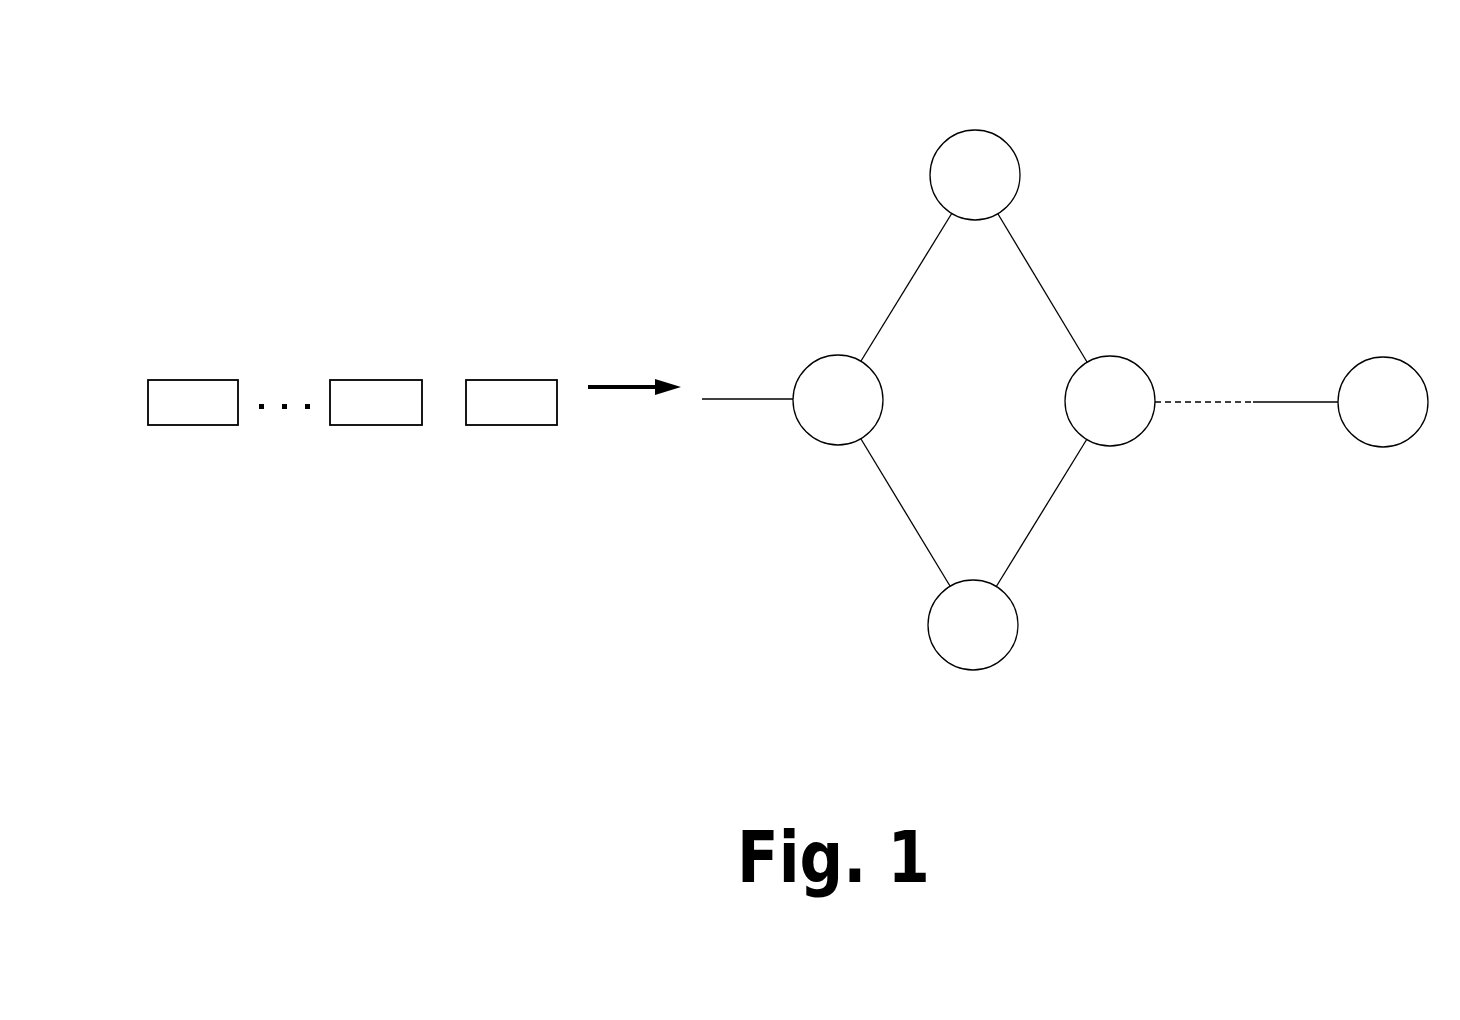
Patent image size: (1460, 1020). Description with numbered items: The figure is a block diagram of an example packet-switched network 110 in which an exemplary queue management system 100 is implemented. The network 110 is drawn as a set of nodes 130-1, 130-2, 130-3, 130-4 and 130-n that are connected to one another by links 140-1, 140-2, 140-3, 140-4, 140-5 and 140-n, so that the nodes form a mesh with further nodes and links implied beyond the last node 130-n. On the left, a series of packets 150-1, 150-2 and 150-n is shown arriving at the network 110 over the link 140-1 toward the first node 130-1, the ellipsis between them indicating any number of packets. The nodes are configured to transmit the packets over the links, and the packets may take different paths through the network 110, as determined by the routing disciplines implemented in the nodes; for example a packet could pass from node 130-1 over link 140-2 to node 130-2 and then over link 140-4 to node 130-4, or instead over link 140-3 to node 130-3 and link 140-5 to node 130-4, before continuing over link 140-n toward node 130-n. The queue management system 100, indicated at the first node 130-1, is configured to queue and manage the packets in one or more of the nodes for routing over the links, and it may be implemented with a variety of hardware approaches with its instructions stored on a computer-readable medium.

The queue management system 100 is at (830, 422).
The packet-switched network 110 is at (640, 51).
The node 130-1 is at (812, 362).
The node 130-2 is at (983, 131).
The node 130-3 is at (977, 670).
The node 130-4 is at (1142, 368).
The node 130-n is at (1378, 358).
The link 140-1 is at (752, 400).
The link 140-2 is at (918, 258).
The link 140-3 is at (911, 520).
The link 140-4 is at (1031, 256).
The link 140-5 is at (1058, 482).
The link 140-n is at (1272, 404).
The packet 150-1 is at (510, 425).
The packet 150-2 is at (375, 425).
The packet 150-n is at (193, 425).